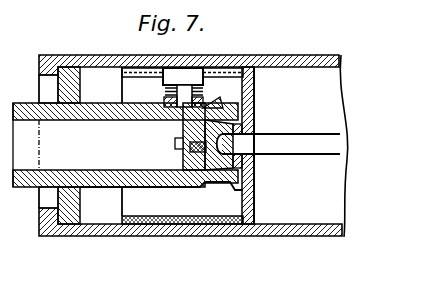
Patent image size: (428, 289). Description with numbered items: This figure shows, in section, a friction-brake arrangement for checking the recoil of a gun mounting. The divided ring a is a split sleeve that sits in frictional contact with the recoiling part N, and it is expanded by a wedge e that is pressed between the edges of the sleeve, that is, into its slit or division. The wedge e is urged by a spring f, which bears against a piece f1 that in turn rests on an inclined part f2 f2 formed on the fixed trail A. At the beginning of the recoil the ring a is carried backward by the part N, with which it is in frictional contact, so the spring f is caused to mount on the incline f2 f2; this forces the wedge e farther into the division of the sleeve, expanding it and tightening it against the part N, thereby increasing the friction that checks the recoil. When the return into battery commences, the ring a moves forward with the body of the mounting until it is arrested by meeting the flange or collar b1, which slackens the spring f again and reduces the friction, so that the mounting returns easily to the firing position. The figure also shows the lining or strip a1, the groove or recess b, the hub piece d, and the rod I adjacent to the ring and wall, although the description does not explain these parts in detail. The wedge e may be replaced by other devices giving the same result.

The part N is at (293, 63).
The divided ring a is at (201, 233).
The inner lining strip a1 is at (156, 233).
The groove b is at (62, 89).
The flange or collar b1 is at (250, 97).
The trail A is at (128, 145).
The wedge e is at (183, 76).
The spring f is at (166, 90).
The piece f1 is at (213, 103).
The inclined part f2 is at (180, 119).
The hub d is at (208, 136).
The rod I is at (278, 145).